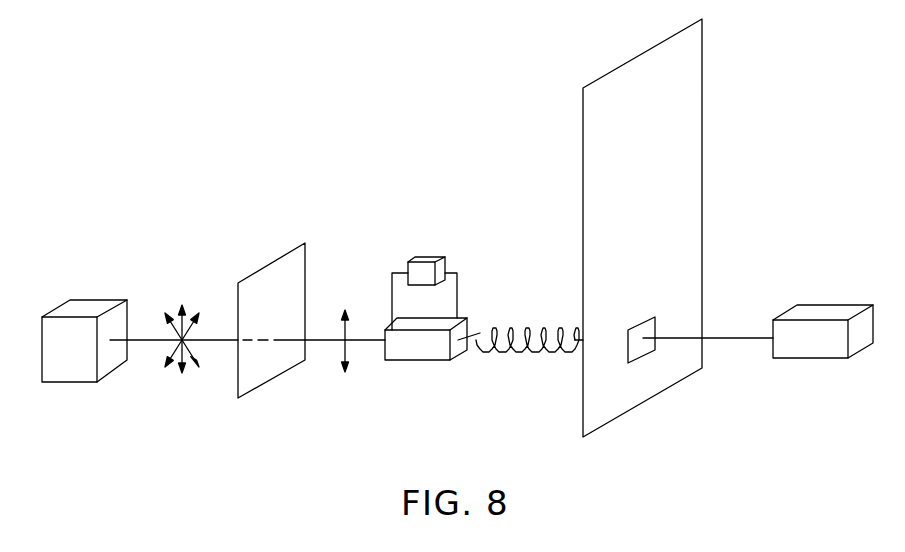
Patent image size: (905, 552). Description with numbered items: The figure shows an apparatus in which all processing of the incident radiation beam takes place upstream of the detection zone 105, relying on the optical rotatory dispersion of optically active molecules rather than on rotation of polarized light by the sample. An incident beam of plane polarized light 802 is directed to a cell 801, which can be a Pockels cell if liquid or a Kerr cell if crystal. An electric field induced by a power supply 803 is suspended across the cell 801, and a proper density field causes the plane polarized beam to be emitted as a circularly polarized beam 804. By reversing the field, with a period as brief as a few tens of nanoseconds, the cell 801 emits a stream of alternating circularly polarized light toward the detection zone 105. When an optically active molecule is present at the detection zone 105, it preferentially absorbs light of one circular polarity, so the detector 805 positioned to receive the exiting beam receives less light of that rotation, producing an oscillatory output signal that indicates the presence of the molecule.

The detection zone 105 is at (650, 328).
The Pockels cell or Kerr cell 801 is at (430, 362).
The incident beam of plane polarized light 802 is at (363, 343).
The power supply 803 is at (423, 255).
The circularly polarized beam 804 is at (517, 327).
The detector 805 is at (815, 360).